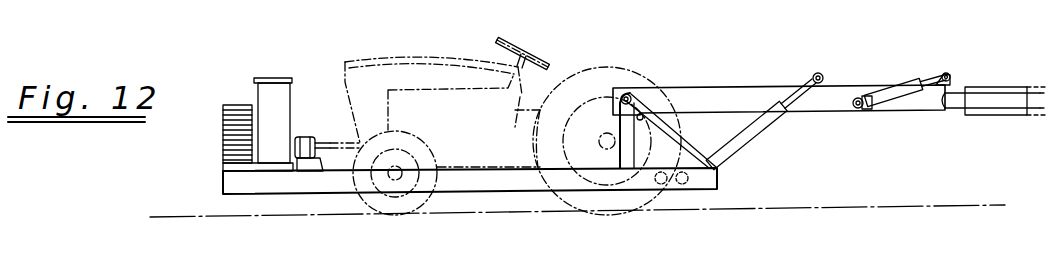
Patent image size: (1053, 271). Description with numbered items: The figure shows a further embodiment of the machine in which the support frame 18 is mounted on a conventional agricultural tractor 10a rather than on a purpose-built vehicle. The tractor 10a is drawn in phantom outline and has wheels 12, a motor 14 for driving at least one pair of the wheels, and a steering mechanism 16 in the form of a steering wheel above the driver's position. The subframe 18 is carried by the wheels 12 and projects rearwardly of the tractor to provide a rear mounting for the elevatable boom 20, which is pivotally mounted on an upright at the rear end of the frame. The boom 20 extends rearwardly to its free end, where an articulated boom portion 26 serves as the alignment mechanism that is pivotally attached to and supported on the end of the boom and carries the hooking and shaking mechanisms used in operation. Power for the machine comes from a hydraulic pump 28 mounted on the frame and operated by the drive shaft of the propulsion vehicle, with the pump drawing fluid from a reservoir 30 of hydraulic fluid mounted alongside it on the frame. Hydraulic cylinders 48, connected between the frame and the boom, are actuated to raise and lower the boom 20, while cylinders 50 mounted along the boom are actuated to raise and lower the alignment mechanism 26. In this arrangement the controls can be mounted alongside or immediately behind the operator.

The agricultural tractor 10a is at (598, 57).
The wheels 12 is at (425, 200).
The motor 14 is at (396, 57).
The steering mechanism 16 is at (548, 58).
The subframe 18 is at (327, 191).
The boom 20 is at (732, 84).
The articulated boom portion 26 is at (998, 80).
The hydraulic pump 28 is at (305, 136).
The reservoir 30 is at (283, 96).
The hydraulic cylinders 48 is at (749, 134).
The cylinders 50 is at (900, 84).